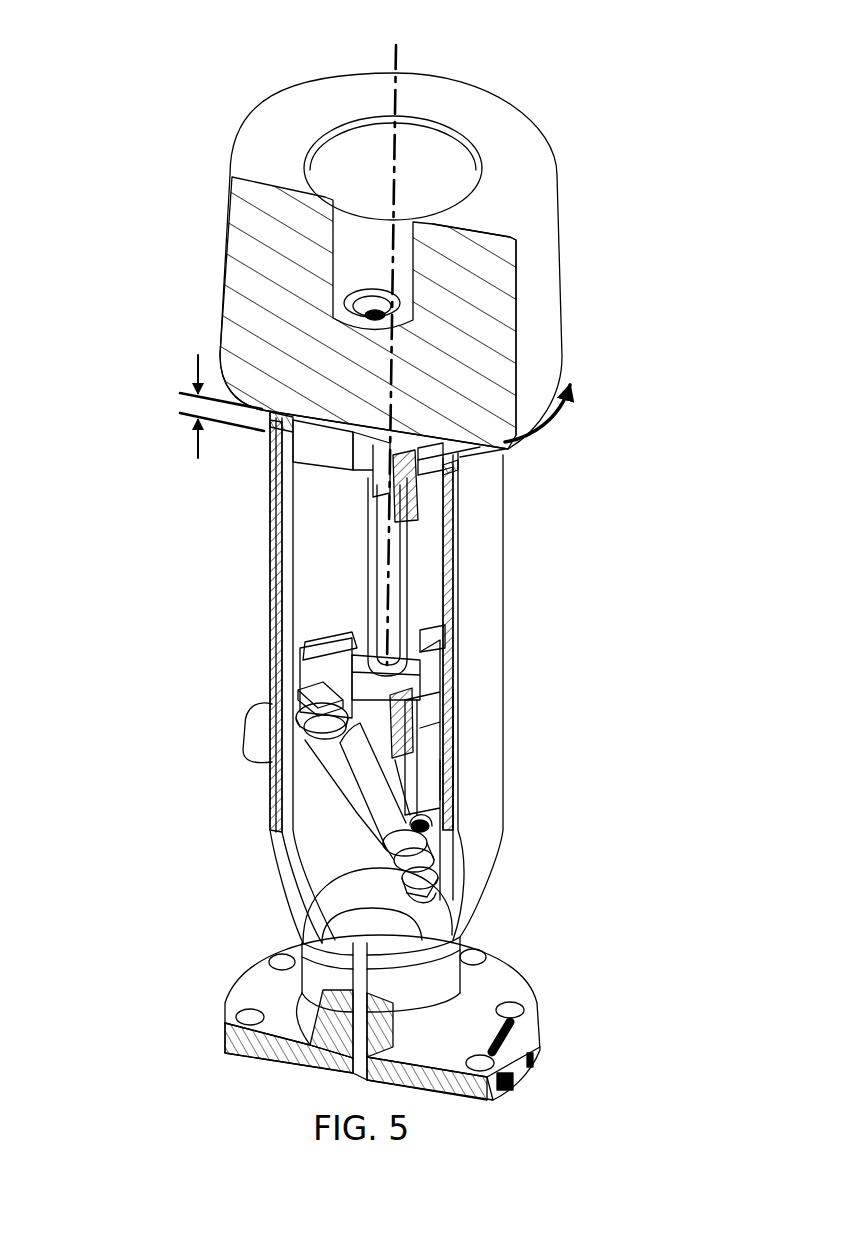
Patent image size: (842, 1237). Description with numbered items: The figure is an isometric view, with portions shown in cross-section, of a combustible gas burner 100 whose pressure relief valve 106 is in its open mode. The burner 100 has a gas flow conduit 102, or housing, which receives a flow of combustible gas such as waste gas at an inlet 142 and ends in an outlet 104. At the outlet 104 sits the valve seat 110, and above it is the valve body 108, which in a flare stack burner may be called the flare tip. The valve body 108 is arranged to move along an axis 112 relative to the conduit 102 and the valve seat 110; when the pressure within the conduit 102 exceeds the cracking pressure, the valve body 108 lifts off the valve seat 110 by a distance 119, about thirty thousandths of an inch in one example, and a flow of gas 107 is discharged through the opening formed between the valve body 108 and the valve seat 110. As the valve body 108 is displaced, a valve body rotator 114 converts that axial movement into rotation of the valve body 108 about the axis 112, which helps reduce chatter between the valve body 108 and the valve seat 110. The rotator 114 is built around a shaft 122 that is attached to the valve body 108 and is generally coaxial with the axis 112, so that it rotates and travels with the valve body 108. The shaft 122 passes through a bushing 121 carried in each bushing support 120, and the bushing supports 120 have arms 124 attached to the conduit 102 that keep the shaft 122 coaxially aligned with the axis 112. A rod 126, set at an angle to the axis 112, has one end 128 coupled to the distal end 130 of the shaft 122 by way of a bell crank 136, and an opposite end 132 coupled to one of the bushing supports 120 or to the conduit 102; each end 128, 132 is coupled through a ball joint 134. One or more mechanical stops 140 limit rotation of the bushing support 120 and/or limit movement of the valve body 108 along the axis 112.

The burner 100 is at (140, 62).
The gas flow conduit 102 is at (490, 548).
The outlet 104 is at (478, 462).
The pressure relief valve 106 is at (178, 303).
The flow of gas 107 is at (545, 411).
The valve body 108 is at (548, 252).
The valve seat 110 is at (465, 450).
The axis 112 is at (396, 105).
The valve body rotator 114 is at (318, 867).
The distance 119 is at (186, 403).
The bushing support 120 is at (420, 468).
The bushing 121 is at (363, 480).
The shaft 122 is at (378, 582).
The arms 124 is at (310, 453).
The rod 126 is at (355, 780).
The end of rod 128 is at (428, 896).
The distal end of shaft 130 is at (400, 782).
The end of rod 132 is at (297, 692).
The ball joint 134 is at (328, 738).
The bell crank 136 is at (425, 818).
The mechanical stop 140 is at (425, 737).
The inlet 142 is at (248, 725).